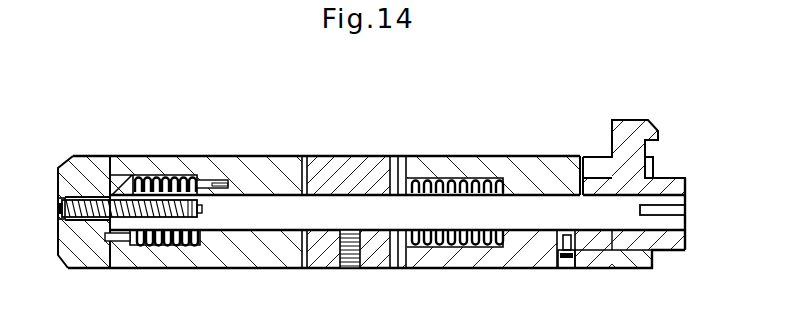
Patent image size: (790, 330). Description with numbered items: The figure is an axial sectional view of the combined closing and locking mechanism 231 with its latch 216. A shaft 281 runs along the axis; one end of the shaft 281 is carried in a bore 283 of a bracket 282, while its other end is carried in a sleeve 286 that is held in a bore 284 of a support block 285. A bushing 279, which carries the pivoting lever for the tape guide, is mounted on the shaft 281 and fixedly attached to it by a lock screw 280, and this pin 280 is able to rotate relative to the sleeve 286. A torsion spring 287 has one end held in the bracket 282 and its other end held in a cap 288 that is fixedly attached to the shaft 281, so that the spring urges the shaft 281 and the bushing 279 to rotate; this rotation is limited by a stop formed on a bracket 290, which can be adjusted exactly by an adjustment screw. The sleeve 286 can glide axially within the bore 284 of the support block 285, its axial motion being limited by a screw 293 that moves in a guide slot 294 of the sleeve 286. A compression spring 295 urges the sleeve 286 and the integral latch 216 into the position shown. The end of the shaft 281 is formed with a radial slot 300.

The latch 216 is at (626, 133).
The combined closing and locking mechanism 231 is at (677, 245).
The bushing 279 is at (350, 167).
The lock screw 280 is at (352, 250).
The shaft 281 is at (280, 205).
The bracket 282 is at (245, 176).
The bore 283 is at (235, 228).
The bore 284 is at (499, 262).
The support block 285 is at (493, 165).
The sleeve 286 is at (633, 240).
The torsion spring 287 is at (165, 235).
The cap 288 is at (72, 252).
The bracket 290 is at (400, 250).
The screw 293 is at (563, 260).
The guide slot 294 is at (594, 240).
The compression spring 295 is at (437, 183).
The radial slot 300 is at (673, 214).